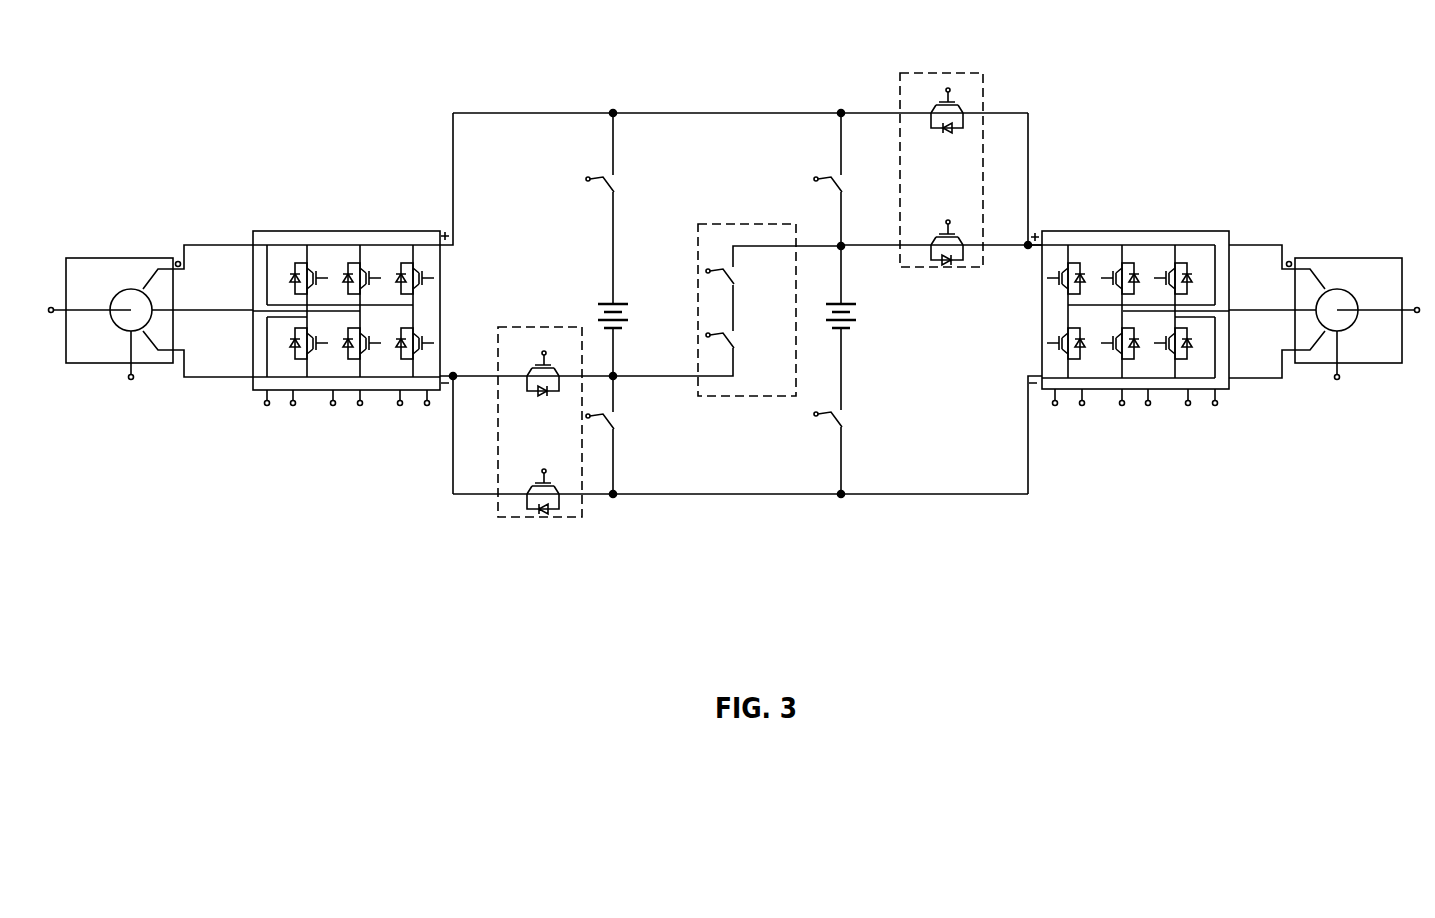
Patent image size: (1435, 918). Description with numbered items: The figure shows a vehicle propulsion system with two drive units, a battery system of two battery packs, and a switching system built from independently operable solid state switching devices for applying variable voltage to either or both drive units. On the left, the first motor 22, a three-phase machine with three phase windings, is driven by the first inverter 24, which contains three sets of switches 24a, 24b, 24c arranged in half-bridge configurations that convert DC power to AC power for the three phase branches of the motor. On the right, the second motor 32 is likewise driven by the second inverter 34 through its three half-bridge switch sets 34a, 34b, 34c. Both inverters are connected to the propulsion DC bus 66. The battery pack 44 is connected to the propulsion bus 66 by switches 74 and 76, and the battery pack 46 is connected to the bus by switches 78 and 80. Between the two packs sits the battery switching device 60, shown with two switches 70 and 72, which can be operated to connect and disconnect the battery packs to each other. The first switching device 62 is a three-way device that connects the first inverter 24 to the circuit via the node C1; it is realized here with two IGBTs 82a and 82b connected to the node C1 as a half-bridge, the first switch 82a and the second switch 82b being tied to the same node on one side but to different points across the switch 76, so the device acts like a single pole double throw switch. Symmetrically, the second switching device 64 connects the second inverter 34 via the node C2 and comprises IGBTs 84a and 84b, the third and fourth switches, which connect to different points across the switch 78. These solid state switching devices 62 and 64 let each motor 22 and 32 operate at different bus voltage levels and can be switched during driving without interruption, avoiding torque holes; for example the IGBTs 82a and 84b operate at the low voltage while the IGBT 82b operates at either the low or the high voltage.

The first motor 22 is at (153, 258).
The first inverter 24 is at (392, 231).
The first set of switches of the first inverter 24a is at (300, 363).
The second set of switches of the first inverter 24b is at (353, 363).
The third set of switches of the first inverter 24c is at (407, 363).
The second motor 32 is at (1320, 258).
The second inverter 34 is at (1187, 231).
The first set of switches of the second inverter 34a is at (1073, 365).
The second set of switches of the second inverter 34b is at (1127, 365).
The third set of switches of the second inverter 34c is at (1182, 365).
The battery pack 44 is at (612, 302).
The battery pack 46 is at (845, 330).
The battery switching device 60 is at (717, 224).
The first switching device 62 is at (573, 517).
The second switching device 64 is at (983, 87).
The propulsion DC bus 66 is at (695, 113).
The switch 70 is at (742, 293).
The switch 72 is at (742, 362).
The switch 74 is at (613, 160).
The switch 76 is at (615, 393).
The switch 78 is at (833, 183).
The switch 80 is at (845, 420).
The IGBT 82a is at (540, 475).
The IGBT 82b is at (538, 357).
The IGBT 84a is at (957, 110).
The IGBT 84b is at (943, 222).
The node C1 is at (455, 380).
The node C2 is at (1030, 240).